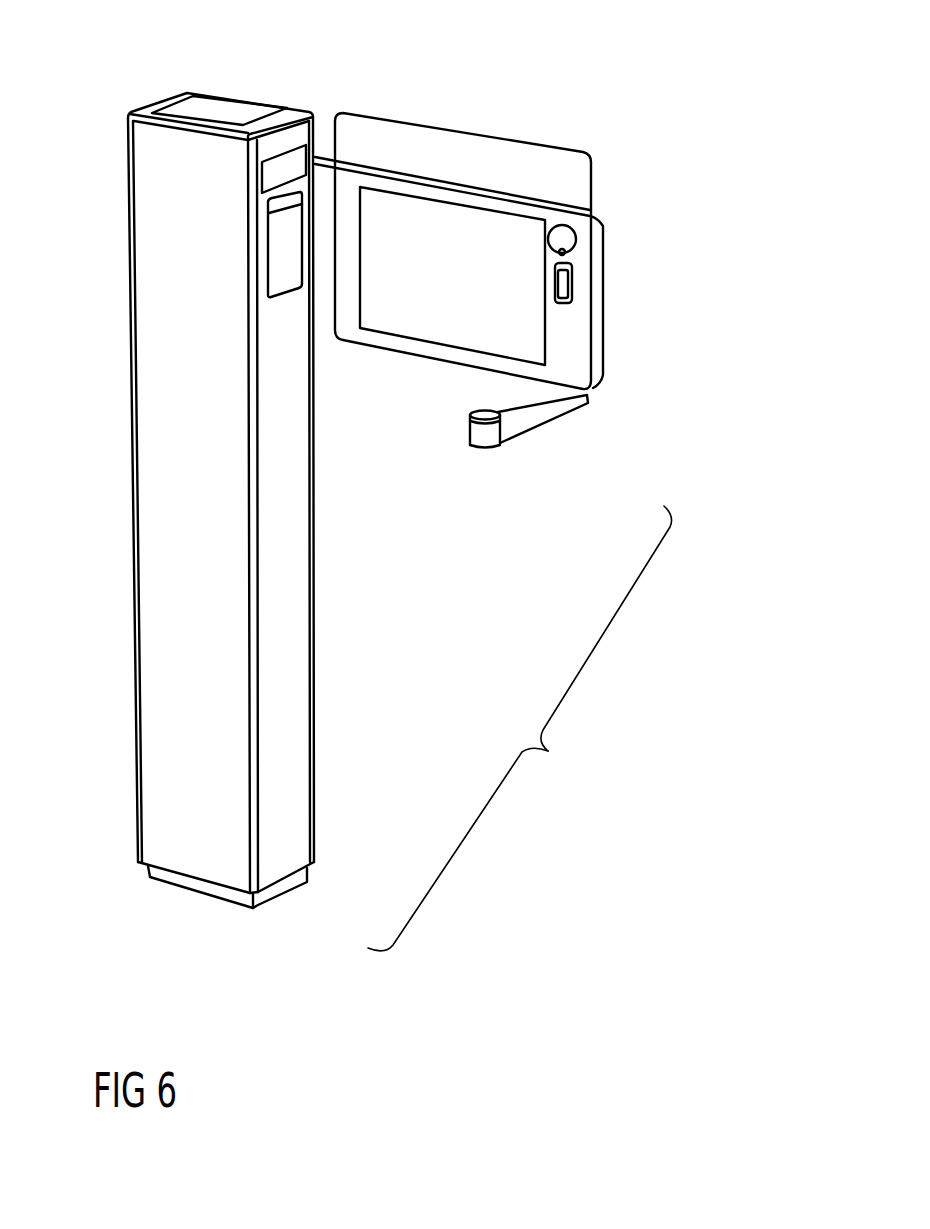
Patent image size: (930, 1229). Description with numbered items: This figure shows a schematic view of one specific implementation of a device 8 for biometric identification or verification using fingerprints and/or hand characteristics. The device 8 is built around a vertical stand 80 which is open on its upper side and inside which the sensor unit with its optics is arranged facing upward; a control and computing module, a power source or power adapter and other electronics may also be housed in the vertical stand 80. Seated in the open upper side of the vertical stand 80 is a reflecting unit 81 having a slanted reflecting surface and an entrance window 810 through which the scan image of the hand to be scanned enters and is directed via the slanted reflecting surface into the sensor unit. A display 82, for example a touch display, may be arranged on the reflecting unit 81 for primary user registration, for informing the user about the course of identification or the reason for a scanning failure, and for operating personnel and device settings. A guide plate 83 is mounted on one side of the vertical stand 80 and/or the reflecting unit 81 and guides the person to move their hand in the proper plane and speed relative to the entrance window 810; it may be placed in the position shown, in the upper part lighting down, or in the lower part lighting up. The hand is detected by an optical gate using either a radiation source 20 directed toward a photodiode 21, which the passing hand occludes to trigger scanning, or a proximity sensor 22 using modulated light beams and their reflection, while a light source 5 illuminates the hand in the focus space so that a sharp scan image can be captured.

The light source 5 is at (302, 158).
The device 8 is at (520, 728).
The radiation source 20 is at (487, 418).
The photodiode 21 is at (570, 252).
The proximity sensor 22 is at (573, 280).
The vertical stand 80 is at (155, 657).
The reflecting unit 81 is at (167, 237).
The display 82 is at (204, 104).
The guide plate 83 is at (598, 213).
The entrance window 810 is at (282, 270).